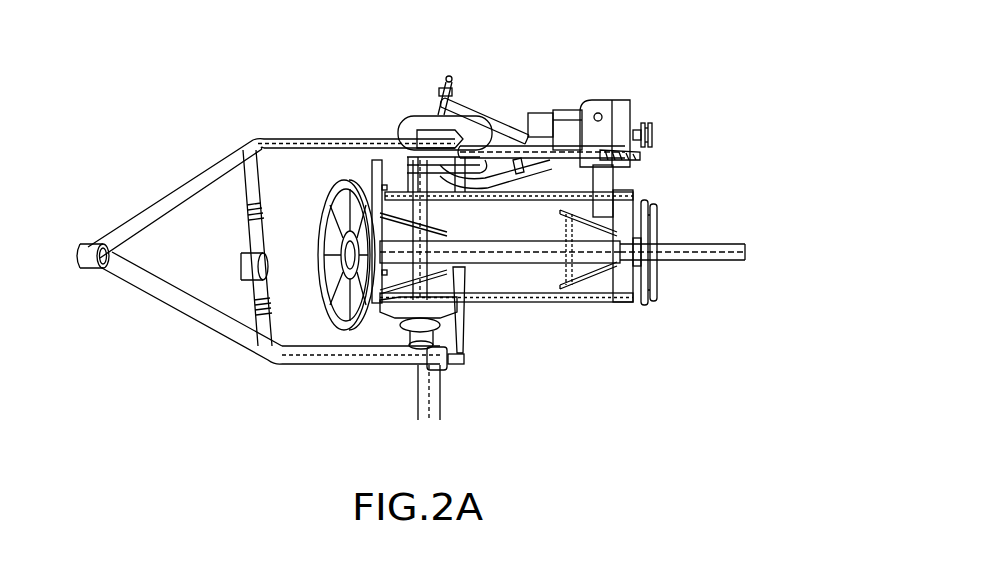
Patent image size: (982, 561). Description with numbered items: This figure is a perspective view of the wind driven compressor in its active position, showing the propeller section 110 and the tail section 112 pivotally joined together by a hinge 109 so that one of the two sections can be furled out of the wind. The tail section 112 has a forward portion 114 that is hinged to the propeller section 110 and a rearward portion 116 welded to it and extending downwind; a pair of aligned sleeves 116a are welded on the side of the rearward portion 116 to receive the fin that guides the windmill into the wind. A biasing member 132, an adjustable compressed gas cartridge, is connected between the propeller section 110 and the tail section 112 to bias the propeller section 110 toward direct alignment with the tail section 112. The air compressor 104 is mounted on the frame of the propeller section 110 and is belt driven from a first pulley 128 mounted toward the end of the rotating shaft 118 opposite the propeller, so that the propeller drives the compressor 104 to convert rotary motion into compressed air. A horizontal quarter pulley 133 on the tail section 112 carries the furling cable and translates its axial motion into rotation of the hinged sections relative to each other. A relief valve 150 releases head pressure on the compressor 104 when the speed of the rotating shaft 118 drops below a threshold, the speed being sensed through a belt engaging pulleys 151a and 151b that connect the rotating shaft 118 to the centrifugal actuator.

The propeller section 110 is at (543, 66).
The tail section 112 is at (196, 135).
The forward portion 114 is at (280, 360).
The rearward portion 116 is at (167, 305).
The aligned sleeves 116a is at (88, 264).
The rotating shaft 118 is at (748, 246).
The first pulley 128 is at (335, 320).
The biasing member 132 is at (566, 147).
The horizontal quarter pulley 133 is at (450, 118).
The air compressor 104 is at (413, 128).
The hinge 109 is at (425, 305).
The relief valve 150 is at (442, 75).
The pulley 151a is at (654, 137).
The pulley 151b is at (659, 222).